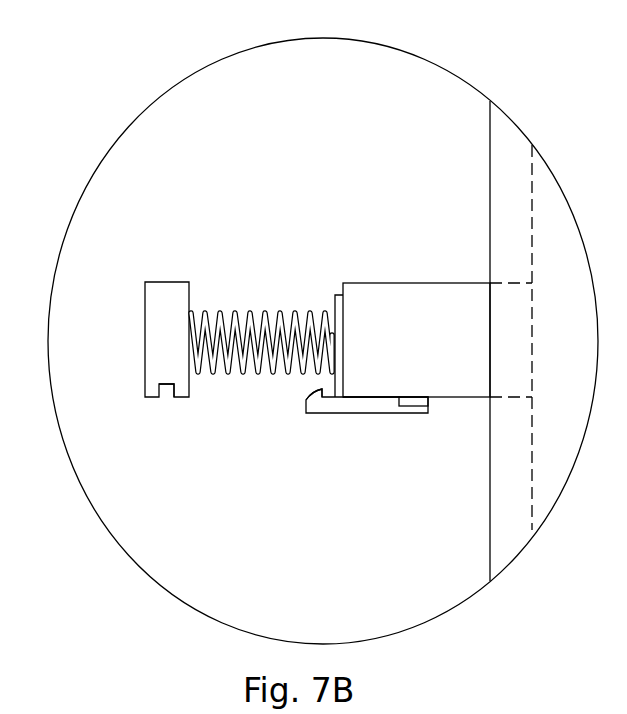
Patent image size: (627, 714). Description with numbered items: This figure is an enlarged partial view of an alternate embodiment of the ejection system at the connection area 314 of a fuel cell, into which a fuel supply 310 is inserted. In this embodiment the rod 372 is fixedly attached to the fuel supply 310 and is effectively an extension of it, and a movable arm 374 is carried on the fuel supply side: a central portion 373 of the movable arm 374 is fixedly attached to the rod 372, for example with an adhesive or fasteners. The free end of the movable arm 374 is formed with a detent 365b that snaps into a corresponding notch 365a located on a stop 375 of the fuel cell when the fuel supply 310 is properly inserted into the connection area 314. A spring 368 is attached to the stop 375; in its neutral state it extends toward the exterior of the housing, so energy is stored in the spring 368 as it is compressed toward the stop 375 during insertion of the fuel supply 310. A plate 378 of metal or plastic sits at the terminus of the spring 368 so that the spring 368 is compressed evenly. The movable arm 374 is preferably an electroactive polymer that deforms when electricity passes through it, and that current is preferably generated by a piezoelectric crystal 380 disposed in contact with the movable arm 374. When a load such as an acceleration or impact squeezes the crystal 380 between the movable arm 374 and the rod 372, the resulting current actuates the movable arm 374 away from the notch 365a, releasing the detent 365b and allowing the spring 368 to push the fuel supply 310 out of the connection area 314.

The fuel supply 310 is at (585, 332).
The connection area 314 is at (505, 530).
The notch 365a is at (168, 398).
The detent 365b is at (310, 394).
The spring 368 is at (237, 310).
The rod 372 is at (448, 343).
The central portion 373 is at (366, 397).
The movable arm 374 is at (362, 414).
The stop 375 is at (165, 282).
The plate 378 is at (337, 296).
The piezoelectric crystal 380 is at (420, 403).